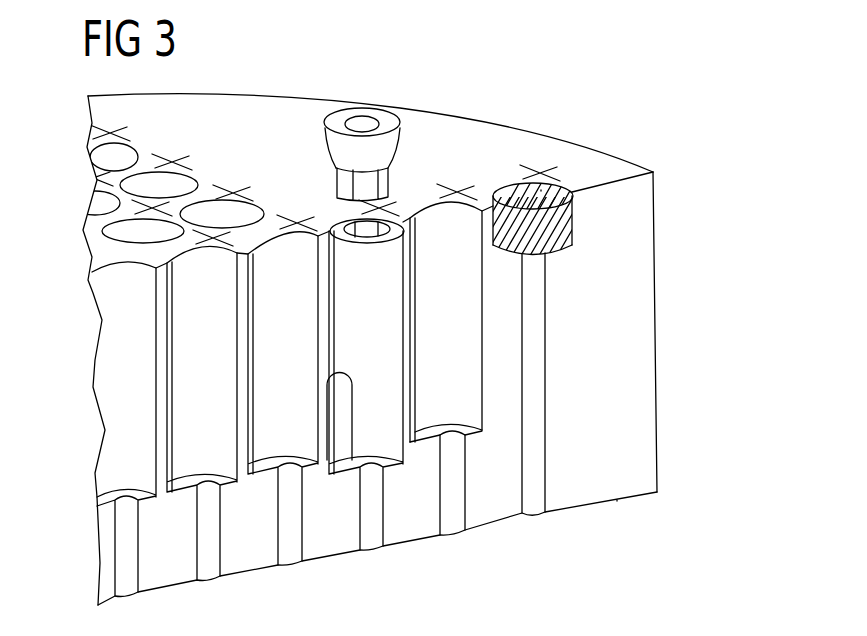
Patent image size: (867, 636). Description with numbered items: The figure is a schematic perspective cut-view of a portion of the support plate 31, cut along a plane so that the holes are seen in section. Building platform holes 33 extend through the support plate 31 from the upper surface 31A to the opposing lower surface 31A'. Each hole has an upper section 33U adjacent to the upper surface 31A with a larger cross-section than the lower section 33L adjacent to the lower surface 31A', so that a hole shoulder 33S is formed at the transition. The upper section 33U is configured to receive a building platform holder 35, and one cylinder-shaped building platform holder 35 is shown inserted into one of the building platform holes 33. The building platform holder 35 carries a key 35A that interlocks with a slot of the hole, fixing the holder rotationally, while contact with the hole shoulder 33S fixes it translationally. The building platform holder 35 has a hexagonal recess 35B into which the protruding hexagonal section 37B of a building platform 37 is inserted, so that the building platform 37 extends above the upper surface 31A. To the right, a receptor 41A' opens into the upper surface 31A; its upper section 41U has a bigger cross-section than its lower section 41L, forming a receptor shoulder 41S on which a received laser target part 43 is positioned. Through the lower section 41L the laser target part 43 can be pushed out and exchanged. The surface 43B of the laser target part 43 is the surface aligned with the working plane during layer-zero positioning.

The support plate 31 is at (655, 258).
The upper surface 31A is at (315, 149).
The lower surface 31A' is at (635, 550).
The building platform hole 33 is at (446, 371).
The upper section 33U is at (452, 322).
The hole shoulder 33S is at (433, 411).
The lower section 33L is at (453, 515).
The building platform holder 35 is at (353, 358).
The key 35A is at (340, 445).
The hexagonal recess 35B is at (342, 218).
The building platform 37 is at (323, 126).
The protruding hexagonal section 37B is at (337, 180).
The upper section of receptor 41U is at (566, 148).
The receptor shoulder 41S is at (573, 240).
The lower section of receptor 41L is at (535, 367).
The receptor 41A' is at (548, 129).
The laser target part 43 is at (536, 148).
The surface of laser target part 43B is at (557, 186).